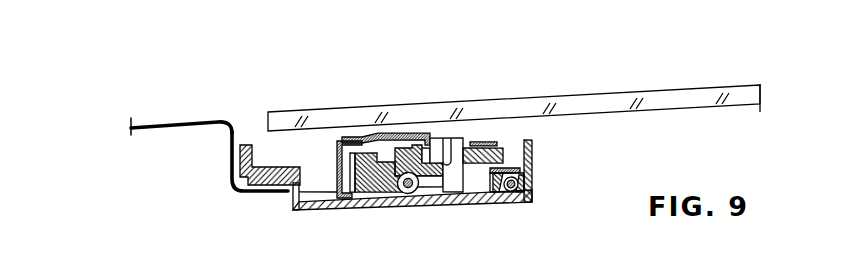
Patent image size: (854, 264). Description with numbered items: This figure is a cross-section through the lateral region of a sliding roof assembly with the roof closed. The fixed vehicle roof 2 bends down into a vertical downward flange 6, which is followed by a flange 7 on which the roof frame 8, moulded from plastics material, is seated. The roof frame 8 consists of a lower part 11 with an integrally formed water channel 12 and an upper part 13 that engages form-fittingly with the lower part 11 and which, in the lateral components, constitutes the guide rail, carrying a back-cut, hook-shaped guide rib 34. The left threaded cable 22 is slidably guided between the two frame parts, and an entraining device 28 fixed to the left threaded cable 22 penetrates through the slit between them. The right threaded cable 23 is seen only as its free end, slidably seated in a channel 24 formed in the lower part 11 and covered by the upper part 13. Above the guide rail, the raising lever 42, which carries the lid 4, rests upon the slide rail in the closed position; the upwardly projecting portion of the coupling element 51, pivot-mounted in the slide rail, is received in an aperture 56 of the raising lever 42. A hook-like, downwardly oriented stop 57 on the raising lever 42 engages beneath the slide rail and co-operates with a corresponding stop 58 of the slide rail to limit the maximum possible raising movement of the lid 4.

The vehicle roof 2 is at (182, 119).
The lid 4 is at (665, 95).
The vertical downward flange 6 is at (228, 148).
The flange 7 is at (257, 191).
The roof frame 8 is at (538, 171).
The lower part 11 is at (472, 198).
The water channel 12 is at (318, 191).
The upper part 13 is at (369, 165).
The left threaded cable 22 is at (410, 186).
The right threaded cable 23 is at (512, 199).
The channel 24 is at (523, 176).
The entraining device 28 is at (433, 184).
The guide rib 34 is at (409, 152).
The raising lever 42 is at (491, 136).
The coupling element 51 is at (458, 133).
The aperture 56 is at (432, 140).
The stop 57 is at (342, 192).
The stop 58 is at (347, 140).